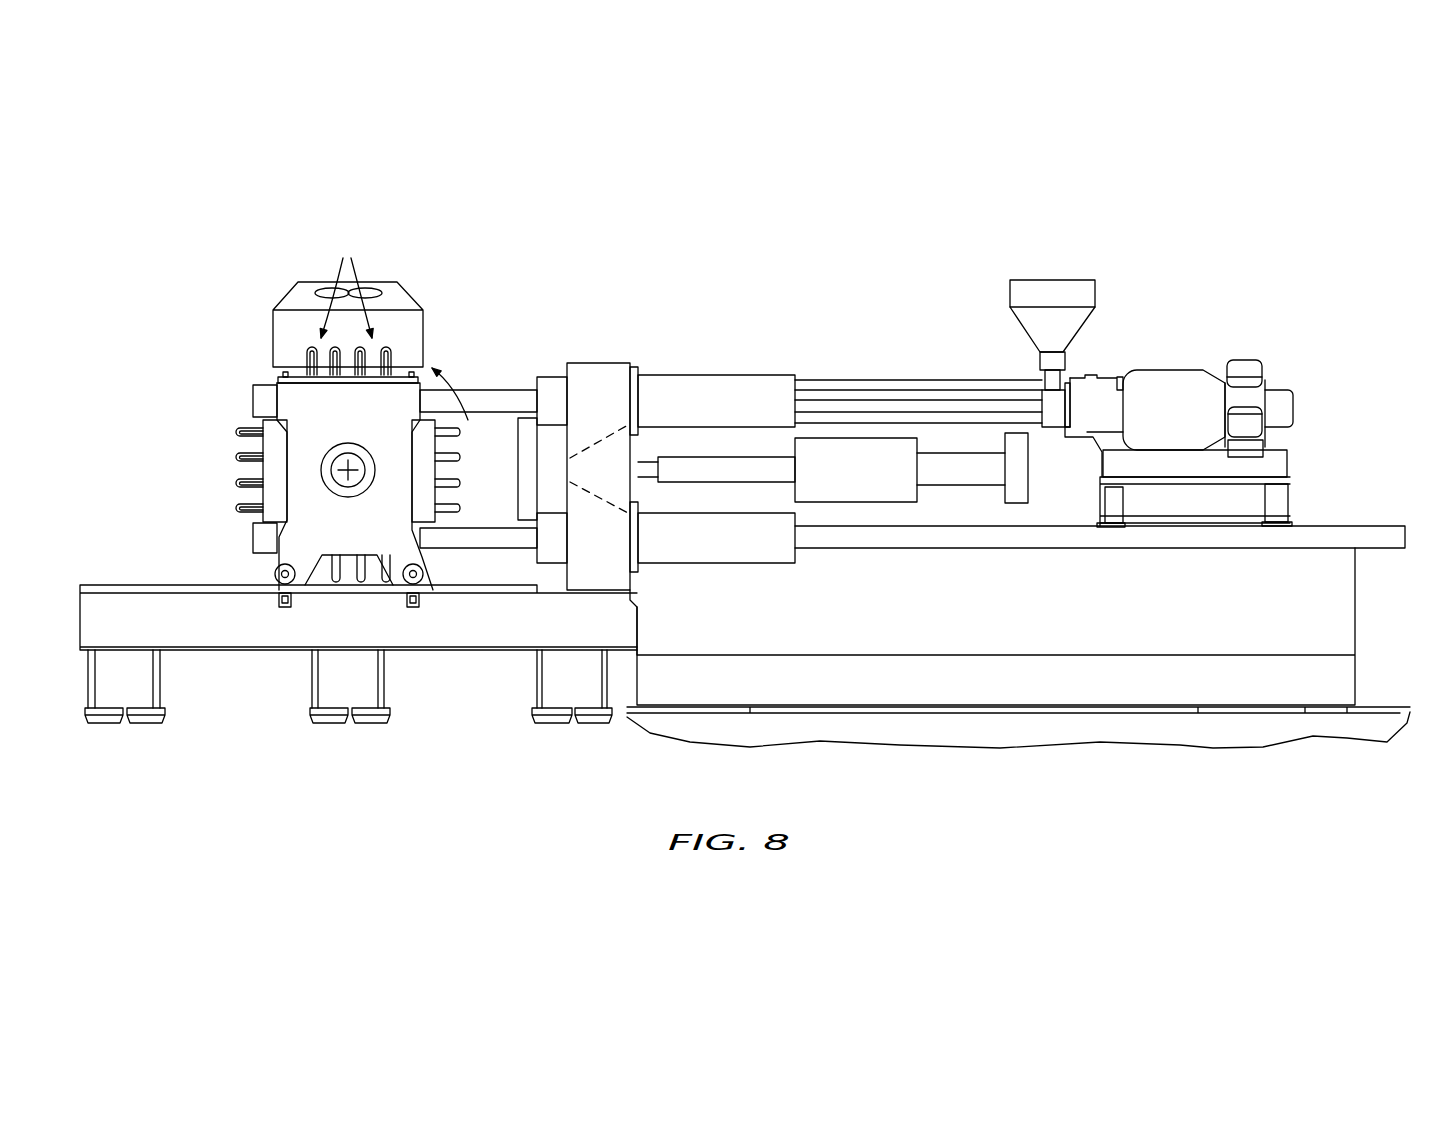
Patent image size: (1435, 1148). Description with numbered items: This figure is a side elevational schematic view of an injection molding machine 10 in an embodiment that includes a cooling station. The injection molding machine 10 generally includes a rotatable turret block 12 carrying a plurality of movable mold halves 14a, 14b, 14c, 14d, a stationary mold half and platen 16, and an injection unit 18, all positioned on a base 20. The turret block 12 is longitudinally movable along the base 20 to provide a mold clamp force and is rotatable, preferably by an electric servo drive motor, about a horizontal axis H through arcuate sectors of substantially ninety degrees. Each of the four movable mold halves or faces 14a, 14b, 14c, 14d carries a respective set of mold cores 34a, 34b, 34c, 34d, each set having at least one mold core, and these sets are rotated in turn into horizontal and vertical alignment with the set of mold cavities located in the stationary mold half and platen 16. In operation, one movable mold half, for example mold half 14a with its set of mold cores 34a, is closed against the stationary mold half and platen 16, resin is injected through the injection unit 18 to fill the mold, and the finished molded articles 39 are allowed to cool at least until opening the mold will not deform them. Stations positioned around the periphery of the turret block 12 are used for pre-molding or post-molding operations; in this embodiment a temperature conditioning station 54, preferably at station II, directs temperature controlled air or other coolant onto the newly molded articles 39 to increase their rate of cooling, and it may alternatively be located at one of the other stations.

The injection molding machine 10 is at (532, 227).
The turret block 12 is at (196, 497).
The movable mold half 14a is at (425, 513).
The movable mold half 14b is at (283, 373).
The movable mold half 14c is at (270, 513).
The movable mold half 14d is at (320, 545).
The stationary mold half and platen 16 is at (578, 378).
The injection unit 18 is at (853, 453).
The base 20 is at (618, 752).
The set of mold cores 34a is at (457, 483).
The set of mold cores 34b is at (388, 357).
The set of mold cores 34c is at (245, 432).
The set of mold cores 34d is at (361, 582).
The molded articles 39 is at (390, 360).
The temperature conditioning station 54 is at (400, 284).
The horizontal axis H is at (337, 462).